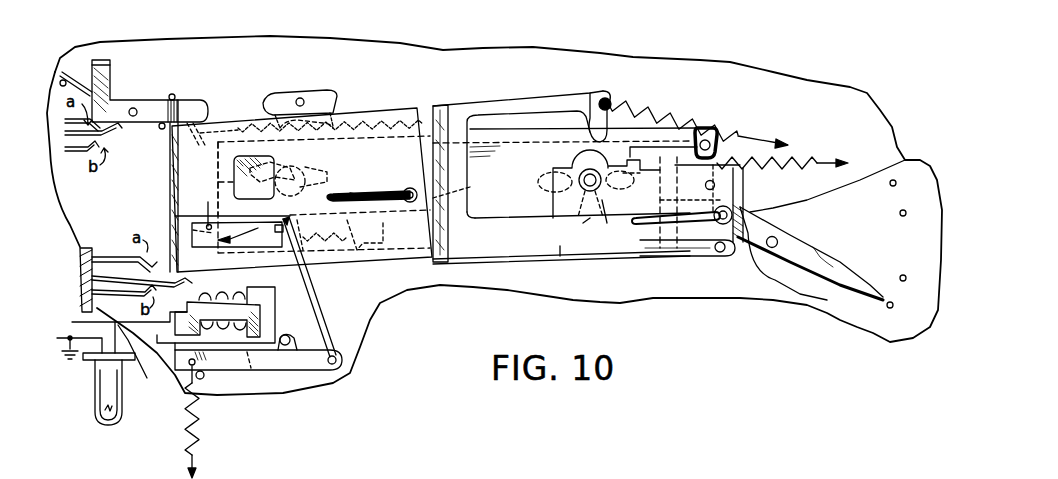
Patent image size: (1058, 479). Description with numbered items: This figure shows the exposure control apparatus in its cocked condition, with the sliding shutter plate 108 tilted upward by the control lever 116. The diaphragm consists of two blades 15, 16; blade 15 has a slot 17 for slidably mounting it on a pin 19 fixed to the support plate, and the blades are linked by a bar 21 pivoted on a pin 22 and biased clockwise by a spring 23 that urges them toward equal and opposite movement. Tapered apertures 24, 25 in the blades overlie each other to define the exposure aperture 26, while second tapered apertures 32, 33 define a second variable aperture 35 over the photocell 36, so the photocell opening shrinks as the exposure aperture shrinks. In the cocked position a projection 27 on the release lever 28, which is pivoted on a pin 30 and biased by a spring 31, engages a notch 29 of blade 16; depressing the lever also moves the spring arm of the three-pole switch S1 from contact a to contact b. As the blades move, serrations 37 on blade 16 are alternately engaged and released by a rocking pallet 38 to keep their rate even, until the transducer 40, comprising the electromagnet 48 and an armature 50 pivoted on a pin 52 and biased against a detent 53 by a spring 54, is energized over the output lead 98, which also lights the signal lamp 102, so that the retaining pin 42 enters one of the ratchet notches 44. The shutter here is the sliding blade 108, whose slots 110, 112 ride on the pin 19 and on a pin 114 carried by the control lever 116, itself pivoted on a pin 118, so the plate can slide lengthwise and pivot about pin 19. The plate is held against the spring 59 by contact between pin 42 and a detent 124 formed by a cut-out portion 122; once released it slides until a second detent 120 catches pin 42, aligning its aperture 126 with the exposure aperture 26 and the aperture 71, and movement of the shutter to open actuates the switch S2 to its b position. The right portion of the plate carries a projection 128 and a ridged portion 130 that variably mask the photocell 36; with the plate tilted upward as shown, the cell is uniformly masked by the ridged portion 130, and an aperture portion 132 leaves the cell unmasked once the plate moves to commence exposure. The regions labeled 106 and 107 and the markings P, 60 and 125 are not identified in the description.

The spring 31 is at (78, 77).
The release lever 28 is at (103, 90).
The projection 27 is at (175, 98).
The notch 29 is at (206, 118).
The aperture 126 is at (248, 154).
The rocking pallet 38 is at (333, 92).
The serrations 37 is at (400, 126).
The tapered aperture 24 is at (310, 170).
The exposure aperture 26 is at (294, 195).
The aperture 71 is at (350, 193).
The slot 110 is at (381, 190).
The pin 19 is at (410, 188).
The tapered aperture 25 is at (200, 178).
The cut-out portion 122 is at (208, 205).
The second detent 120 is at (220, 239).
The detent 124 is at (238, 235).
The plate 106 is at (282, 230).
The plate 107 is at (368, 266).
The ratchet notches 44 is at (333, 262).
The retaining pin 42 is at (320, 322).
The transducer 40 is at (256, 387).
The armature 50 is at (293, 370).
The pin 52 is at (292, 329).
The detent 53 is at (203, 379).
The spring 54 is at (185, 424).
The electromagnet 48 is at (238, 300).
The output lead 98 is at (107, 361).
The signal lamp 102 is at (102, 418).
The three pole switch S1 is at (118, 146).
The switch S2 is at (117, 240).
The aperture portion 132 is at (493, 242).
The blade 15 is at (543, 153).
The blade 16 is at (488, 137).
The projection 128 is at (605, 92).
The slot 17 is at (465, 187).
The ridged portion 130 is at (600, 188).
The second tapered aperture 33 is at (538, 180).
The second tapered aperture 32 is at (623, 173).
The photocell 36 is at (578, 232).
The second variable aperture 35 is at (614, 223).
The shutter plate 108 is at (557, 246).
The spring 59 is at (714, 122).
The spring 23 is at (818, 158).
The pin 22 is at (735, 185).
The bar 21 is at (735, 196).
The slot 112 is at (664, 225).
The pin 114 is at (727, 262).
The control lever 116 is at (842, 268).
The pin 118 is at (777, 237).
The dial mark P is at (903, 174).
The pin 30 is at (915, 211).
The dial mark 60 is at (916, 283).
The dial mark 125 is at (908, 314).